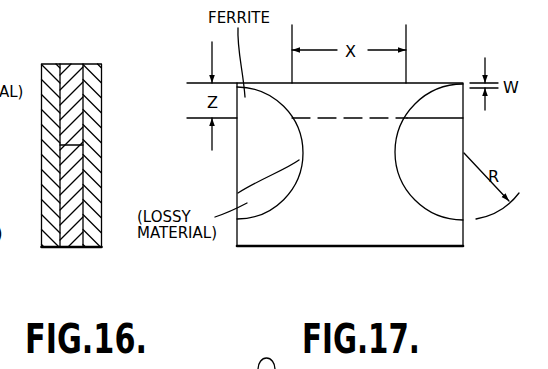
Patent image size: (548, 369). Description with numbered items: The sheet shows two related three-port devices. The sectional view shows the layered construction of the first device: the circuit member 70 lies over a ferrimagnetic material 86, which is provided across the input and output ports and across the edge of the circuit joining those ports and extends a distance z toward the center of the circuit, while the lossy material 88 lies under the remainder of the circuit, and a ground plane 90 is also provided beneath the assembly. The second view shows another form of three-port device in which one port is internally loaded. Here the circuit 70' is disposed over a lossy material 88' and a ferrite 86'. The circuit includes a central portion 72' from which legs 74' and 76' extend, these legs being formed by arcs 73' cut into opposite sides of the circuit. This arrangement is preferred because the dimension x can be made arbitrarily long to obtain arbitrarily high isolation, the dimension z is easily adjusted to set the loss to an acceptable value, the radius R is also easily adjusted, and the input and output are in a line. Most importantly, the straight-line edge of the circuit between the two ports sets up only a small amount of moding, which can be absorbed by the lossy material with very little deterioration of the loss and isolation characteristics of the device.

In FIG. 16, the circuit member 70 is at (54, 155).
In FIG. 16, the ferrimagnetic material 86 is at (79, 214).
In FIG. 16, the lossy material 88 is at (81, 133).
In FIG. 16, the ground plane 90 is at (92, 100).
In FIG. 17, the circuit 70' is at (350, 178).
In FIG. 17, the central portion 72' is at (377, 196).
In FIG. 17, the arcs 73' is at (319, 200).
In FIG. 17, the leg 74' is at (270, 131).
In FIG. 17, the leg 76' is at (457, 131).
In FIG. 17, the ferrite 86' is at (478, 123).
In FIG. 17, the lossy material 88' is at (481, 152).